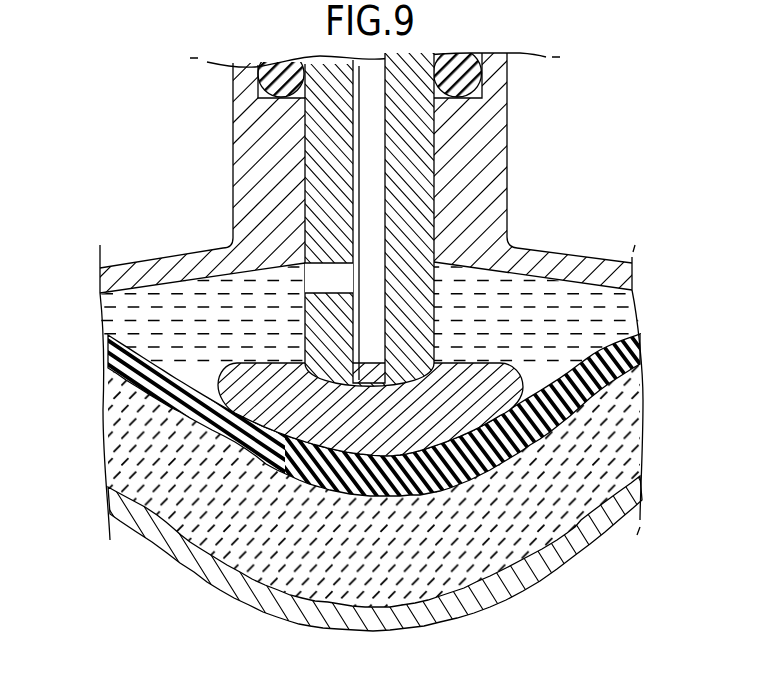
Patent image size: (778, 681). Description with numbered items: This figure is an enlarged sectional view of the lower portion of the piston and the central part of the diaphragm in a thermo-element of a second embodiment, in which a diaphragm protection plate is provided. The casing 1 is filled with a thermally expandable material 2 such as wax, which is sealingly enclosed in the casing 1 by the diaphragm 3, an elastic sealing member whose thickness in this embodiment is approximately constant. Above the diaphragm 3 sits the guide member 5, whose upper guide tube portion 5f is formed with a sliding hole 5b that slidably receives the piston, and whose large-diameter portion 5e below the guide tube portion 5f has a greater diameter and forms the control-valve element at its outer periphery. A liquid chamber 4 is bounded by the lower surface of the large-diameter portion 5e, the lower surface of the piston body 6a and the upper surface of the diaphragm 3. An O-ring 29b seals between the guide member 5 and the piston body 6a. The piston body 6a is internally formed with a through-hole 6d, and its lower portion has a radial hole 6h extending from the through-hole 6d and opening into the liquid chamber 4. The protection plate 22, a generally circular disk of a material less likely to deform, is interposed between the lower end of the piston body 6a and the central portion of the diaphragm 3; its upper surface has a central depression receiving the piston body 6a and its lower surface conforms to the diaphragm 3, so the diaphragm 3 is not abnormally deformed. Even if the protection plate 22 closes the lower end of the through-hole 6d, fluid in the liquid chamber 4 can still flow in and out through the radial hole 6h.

The casing 1 is at (527, 573).
The thermally expandable material 2 is at (612, 437).
The diaphragm 3 is at (643, 337).
The liquid chamber 4 is at (470, 300).
The guide member 5 is at (389, 175).
The sliding hole 5b is at (436, 177).
The large-diameter portion 5e is at (577, 253).
The guide tube portion 5f is at (507, 84).
The piston body 6a is at (327, 200).
The through-hole 6d is at (385, 147).
The radial hole 6h is at (333, 268).
The protection plate 22 is at (300, 398).
The O-ring 29b is at (268, 78).